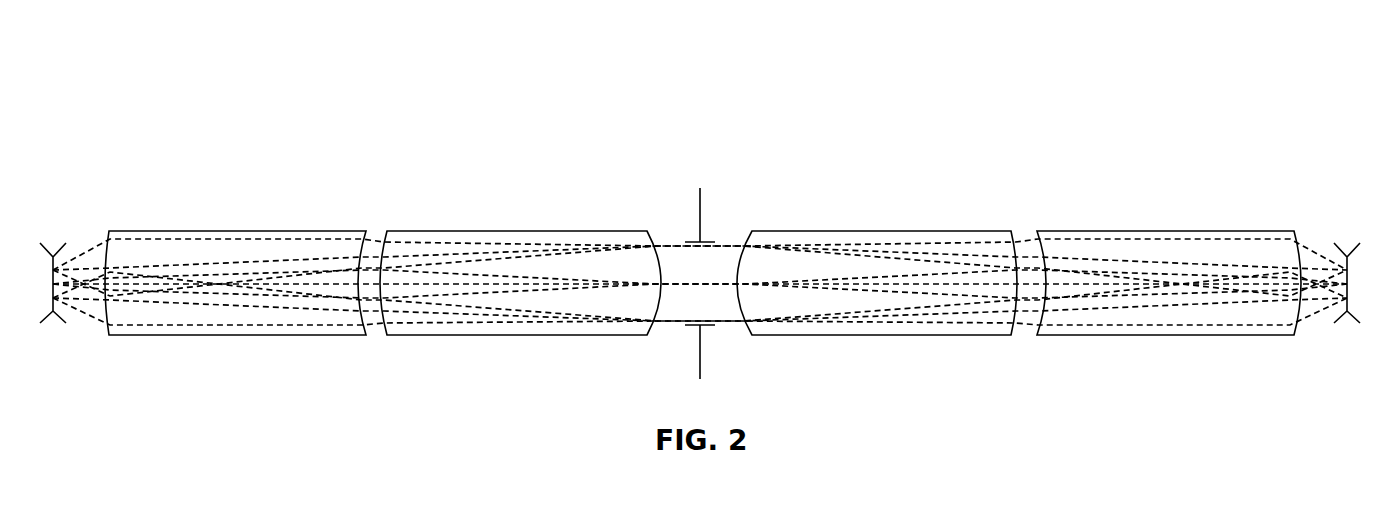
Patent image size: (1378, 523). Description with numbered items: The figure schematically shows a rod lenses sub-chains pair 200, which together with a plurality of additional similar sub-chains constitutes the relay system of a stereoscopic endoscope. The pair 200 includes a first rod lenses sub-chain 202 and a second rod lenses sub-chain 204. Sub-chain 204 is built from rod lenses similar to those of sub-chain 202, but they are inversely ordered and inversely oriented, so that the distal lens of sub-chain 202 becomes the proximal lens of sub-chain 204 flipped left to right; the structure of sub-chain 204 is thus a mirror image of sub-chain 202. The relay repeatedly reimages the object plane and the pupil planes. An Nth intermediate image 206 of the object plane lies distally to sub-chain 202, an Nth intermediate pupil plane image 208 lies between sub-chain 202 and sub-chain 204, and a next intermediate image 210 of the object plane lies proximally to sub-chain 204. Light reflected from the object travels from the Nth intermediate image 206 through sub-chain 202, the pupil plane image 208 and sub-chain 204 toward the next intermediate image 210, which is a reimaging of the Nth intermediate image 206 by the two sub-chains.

The rod lenses sub-chains pair 200 is at (1142, 102).
The first rod lenses sub-chain 202 is at (648, 361).
The second rod lenses sub-chain 204 is at (1293, 361).
The Nth intermediate image 206 is at (52, 224).
The Nth intermediate pupil plane image 208 is at (700, 153).
The (N+1)th intermediate image 210 is at (1347, 220).